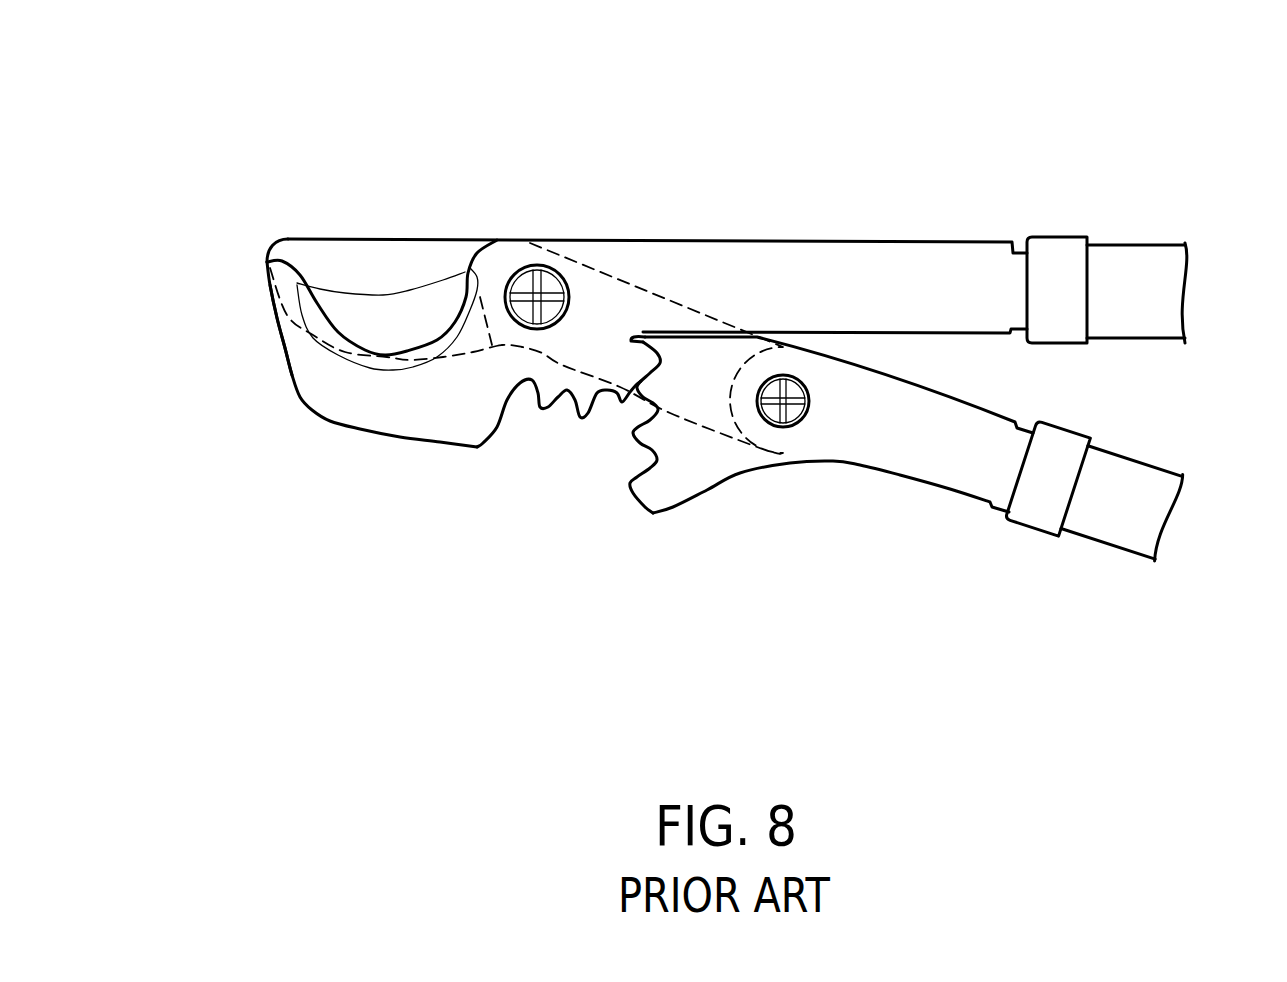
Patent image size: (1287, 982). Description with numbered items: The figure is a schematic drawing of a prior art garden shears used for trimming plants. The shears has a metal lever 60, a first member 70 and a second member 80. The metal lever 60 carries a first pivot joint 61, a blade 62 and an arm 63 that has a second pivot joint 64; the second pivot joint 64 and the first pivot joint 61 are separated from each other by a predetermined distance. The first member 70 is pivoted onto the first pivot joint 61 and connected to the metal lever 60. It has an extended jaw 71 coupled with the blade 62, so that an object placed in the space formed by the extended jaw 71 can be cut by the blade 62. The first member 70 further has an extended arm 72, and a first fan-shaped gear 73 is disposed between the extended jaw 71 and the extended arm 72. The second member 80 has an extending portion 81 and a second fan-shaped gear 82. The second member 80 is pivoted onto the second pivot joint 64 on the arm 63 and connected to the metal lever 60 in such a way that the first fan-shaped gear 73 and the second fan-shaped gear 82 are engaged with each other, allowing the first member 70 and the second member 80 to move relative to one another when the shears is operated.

The metal lever 60 is at (630, 299).
The first pivot joint 61 is at (525, 284).
The blade 62 is at (357, 312).
The arm 63 is at (706, 320).
The second pivot joint 64 is at (773, 413).
The first member 70 is at (383, 442).
The extended jaw 71 is at (345, 353).
The extended arm 72 is at (931, 262).
The first fan-shaped gear 73 is at (545, 398).
The second member 80 is at (1013, 403).
The extending portion 81 is at (932, 465).
The second fan-shaped gear 82 is at (645, 465).